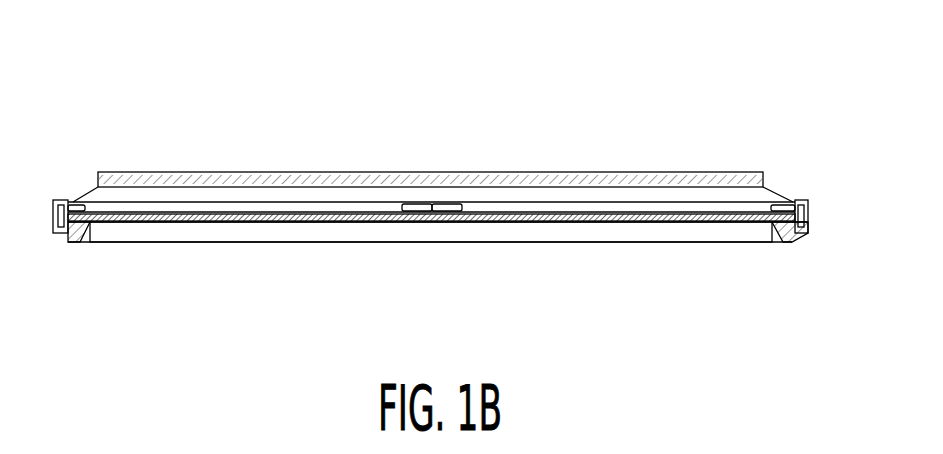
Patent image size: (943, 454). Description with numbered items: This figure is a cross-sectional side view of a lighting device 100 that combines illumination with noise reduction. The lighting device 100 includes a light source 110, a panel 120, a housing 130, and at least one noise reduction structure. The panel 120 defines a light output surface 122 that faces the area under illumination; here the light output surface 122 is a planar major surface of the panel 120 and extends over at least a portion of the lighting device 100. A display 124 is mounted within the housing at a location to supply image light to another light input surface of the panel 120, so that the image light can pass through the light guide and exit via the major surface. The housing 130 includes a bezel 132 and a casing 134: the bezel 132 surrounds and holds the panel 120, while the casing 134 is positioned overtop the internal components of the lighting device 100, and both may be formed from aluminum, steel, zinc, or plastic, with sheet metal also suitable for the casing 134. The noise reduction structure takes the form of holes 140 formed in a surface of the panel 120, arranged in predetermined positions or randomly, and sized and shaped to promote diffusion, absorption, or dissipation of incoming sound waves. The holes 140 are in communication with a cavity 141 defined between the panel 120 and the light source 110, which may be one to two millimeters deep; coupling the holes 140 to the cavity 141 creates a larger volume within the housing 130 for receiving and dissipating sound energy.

The lighting device 100 is at (153, 89).
The light source 110 is at (71, 202).
The panel 120 is at (563, 223).
The light output surface 122 is at (648, 233).
The display 124 is at (345, 202).
The housing 130 is at (618, 172).
The bezel 132 is at (794, 244).
The casing 134 is at (507, 172).
The holes 140 is at (367, 222).
The cavity 141 is at (386, 205).